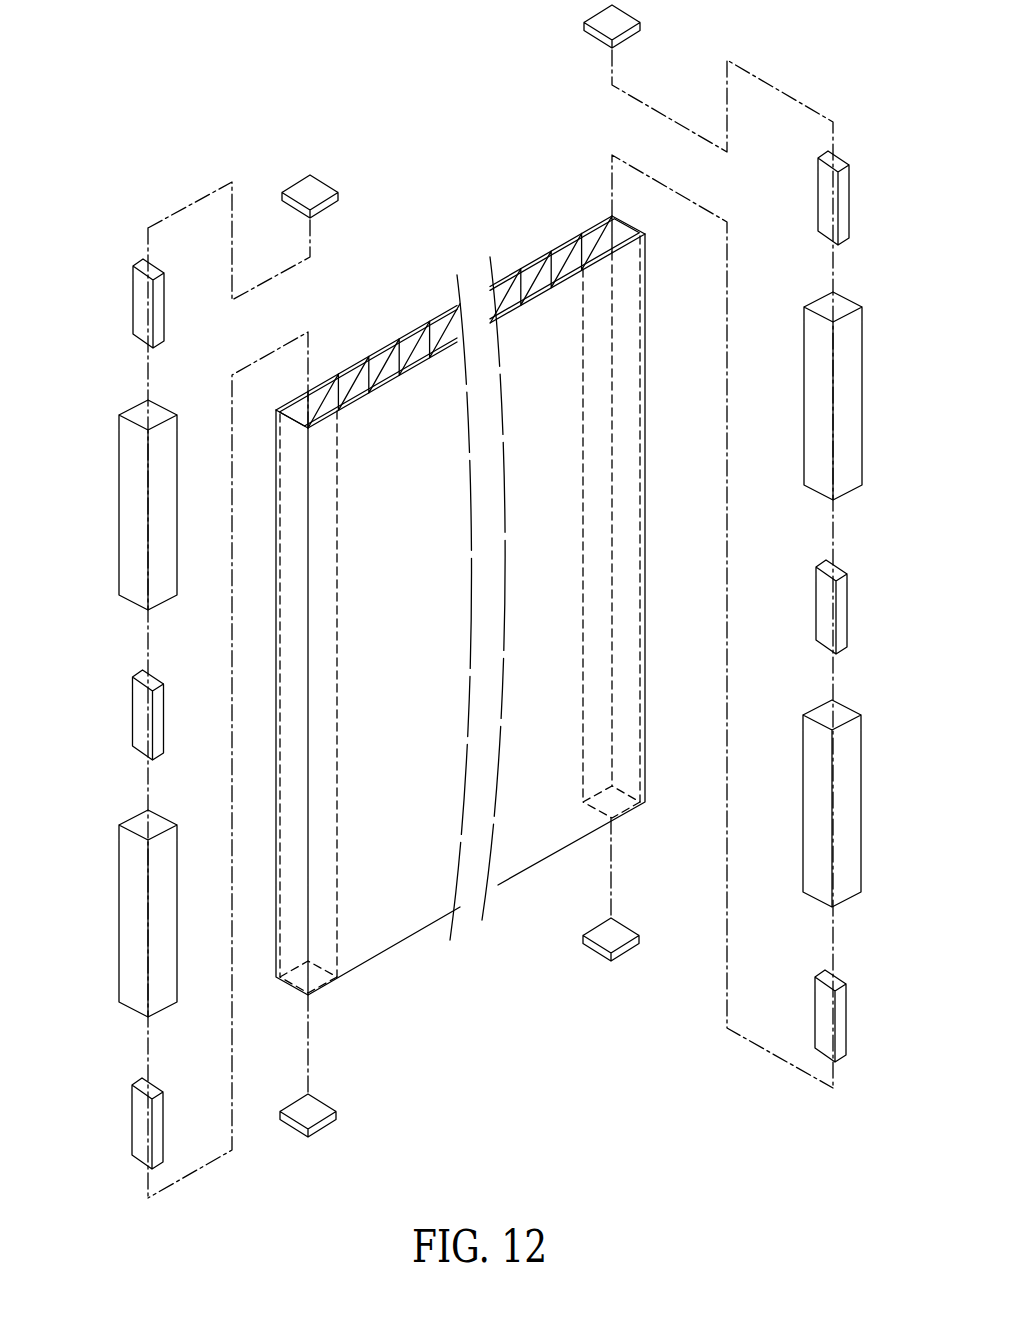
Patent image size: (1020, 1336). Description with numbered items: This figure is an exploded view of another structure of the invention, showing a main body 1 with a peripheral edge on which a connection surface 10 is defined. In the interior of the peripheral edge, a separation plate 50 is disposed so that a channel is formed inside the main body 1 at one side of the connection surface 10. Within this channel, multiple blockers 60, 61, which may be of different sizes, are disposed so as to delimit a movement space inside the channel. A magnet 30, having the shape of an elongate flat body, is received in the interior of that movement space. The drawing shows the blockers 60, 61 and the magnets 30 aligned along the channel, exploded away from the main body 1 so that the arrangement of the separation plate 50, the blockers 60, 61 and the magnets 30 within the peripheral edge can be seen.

The main body 1 is at (441, 614).
The connection surface 10 is at (292, 852).
The magnet 30 is at (143, 303).
The separation plate 50 is at (327, 397).
The blocker 60 is at (135, 510).
The blocker 61 is at (325, 209).